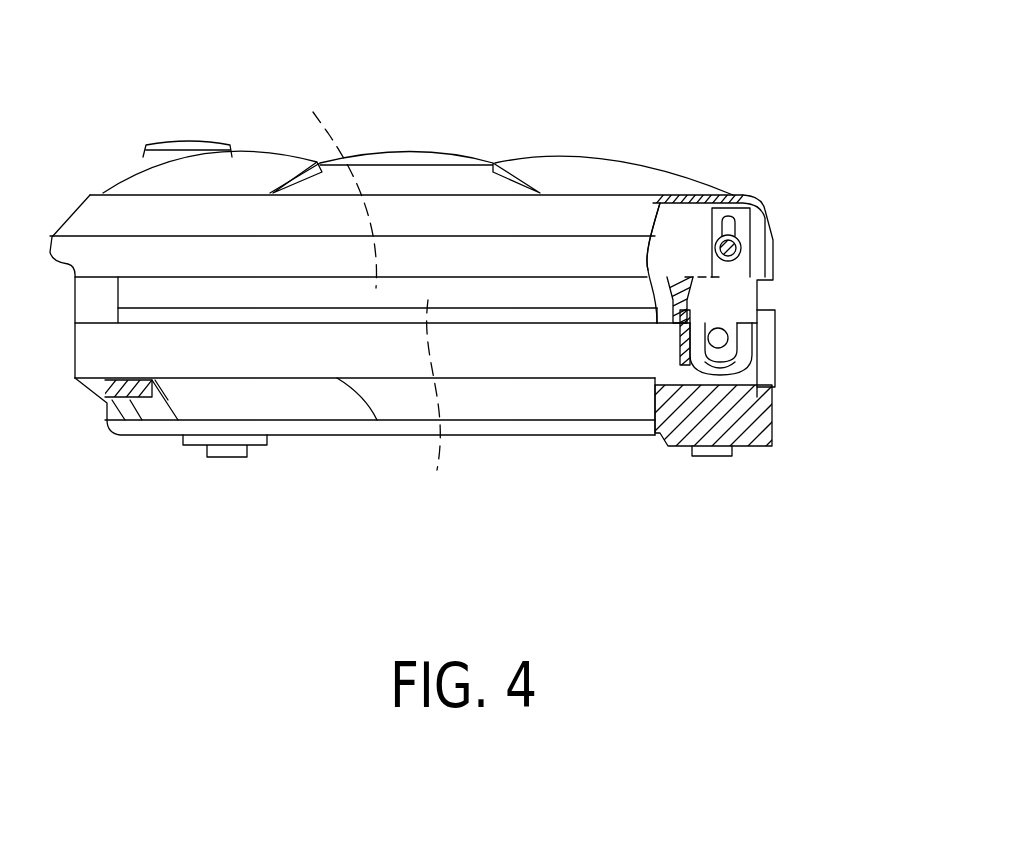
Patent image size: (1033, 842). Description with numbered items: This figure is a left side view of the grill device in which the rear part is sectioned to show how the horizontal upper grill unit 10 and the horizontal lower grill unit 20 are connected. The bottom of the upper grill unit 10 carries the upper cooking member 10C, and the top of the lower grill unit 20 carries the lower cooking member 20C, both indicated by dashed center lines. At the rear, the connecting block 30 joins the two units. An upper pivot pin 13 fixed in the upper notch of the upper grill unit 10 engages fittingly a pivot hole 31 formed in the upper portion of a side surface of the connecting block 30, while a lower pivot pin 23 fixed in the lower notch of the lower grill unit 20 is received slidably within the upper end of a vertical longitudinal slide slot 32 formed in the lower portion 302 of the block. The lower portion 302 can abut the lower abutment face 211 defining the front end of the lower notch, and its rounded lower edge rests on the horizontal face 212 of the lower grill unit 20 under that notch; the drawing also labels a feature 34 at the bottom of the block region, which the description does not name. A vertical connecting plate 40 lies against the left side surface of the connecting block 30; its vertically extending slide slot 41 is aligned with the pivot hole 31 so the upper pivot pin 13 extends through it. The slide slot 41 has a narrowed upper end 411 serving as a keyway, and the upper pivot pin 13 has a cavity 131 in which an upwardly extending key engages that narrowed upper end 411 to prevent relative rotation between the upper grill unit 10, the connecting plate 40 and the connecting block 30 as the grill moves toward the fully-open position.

The upper grill unit 10 is at (412, 140).
The upper cooking member 10C is at (332, 181).
The lower grill unit 20 is at (542, 447).
The lower cooking member 20C is at (442, 405).
The upper pivot pin 13 is at (742, 247).
The cavity 131 is at (712, 248).
The lower abutment face 211 is at (700, 325).
The horizontal face 212 is at (757, 383).
The lower pivot pin 23 is at (725, 337).
The connecting block 30 is at (770, 356).
The lower portion 302 is at (750, 390).
The pivot hole 31 is at (740, 238).
The slide slot 32 is at (715, 372).
The bottom of pivot bracket 34 is at (720, 375).
The connecting plate 40 is at (770, 292).
The slide slot 41 is at (710, 235).
The narrowed upper end 411 is at (712, 240).